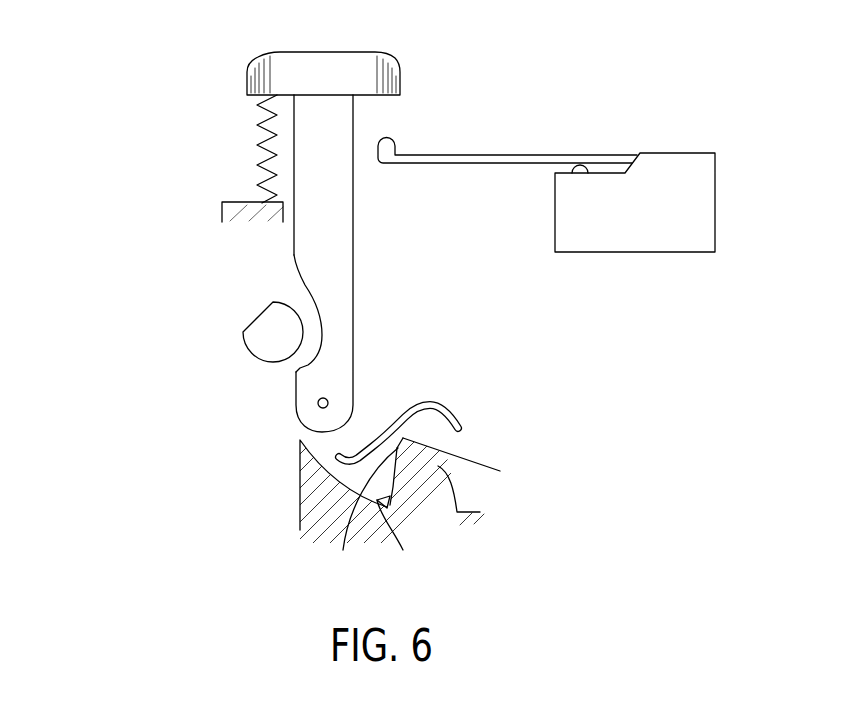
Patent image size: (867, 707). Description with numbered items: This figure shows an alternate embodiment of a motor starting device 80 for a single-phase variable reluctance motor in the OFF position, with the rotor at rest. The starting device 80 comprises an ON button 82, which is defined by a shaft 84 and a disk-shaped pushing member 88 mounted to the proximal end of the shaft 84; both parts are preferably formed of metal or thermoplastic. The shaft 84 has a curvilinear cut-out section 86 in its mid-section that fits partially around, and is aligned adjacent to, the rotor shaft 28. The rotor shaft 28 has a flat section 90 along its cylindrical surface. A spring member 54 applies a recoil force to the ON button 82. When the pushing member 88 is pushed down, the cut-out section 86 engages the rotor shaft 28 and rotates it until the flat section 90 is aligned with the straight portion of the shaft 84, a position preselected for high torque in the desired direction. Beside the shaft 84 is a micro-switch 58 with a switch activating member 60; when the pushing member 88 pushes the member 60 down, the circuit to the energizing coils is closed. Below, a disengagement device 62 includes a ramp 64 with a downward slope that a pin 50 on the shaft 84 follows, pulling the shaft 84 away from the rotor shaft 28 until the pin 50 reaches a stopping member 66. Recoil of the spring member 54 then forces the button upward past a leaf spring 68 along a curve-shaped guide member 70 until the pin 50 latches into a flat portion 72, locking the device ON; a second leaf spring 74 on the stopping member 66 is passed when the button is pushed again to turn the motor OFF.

The rotor shaft 28 is at (257, 340).
The pin 50 is at (317, 405).
The spring member 54 is at (260, 147).
The micro-switch 58 is at (705, 183).
The switch activating member 60 is at (470, 155).
The disengagement device 62 is at (465, 360).
The ramp 64 is at (313, 513).
The stopping member 66 is at (398, 537).
The leaf spring 68 is at (364, 513).
The guide member 70 is at (405, 406).
The flat portion 72 is at (456, 419).
The second leaf spring 74 is at (500, 471).
The motor starting device 80 is at (121, 89).
The ON button 82 is at (437, 68).
The shaft 84 is at (343, 237).
The curvilinear cut-out section 86 is at (317, 305).
The disk-shaped pushing member 88 is at (310, 52).
The flat section 90 is at (265, 308).